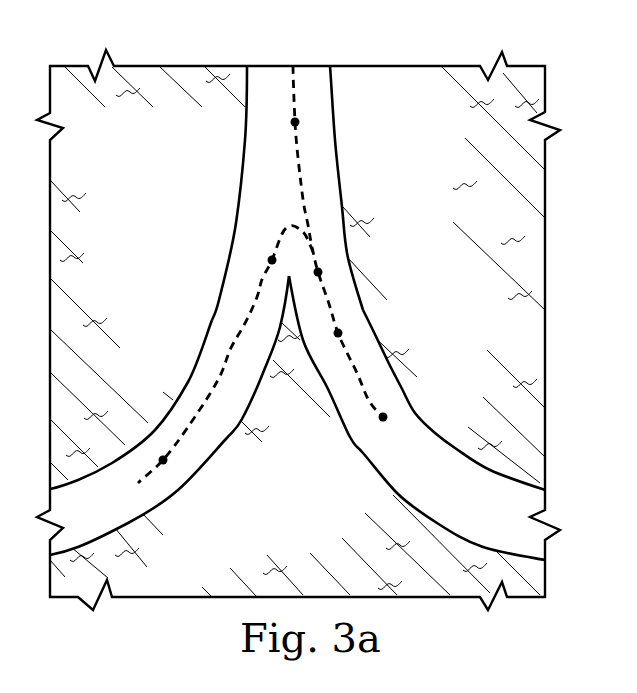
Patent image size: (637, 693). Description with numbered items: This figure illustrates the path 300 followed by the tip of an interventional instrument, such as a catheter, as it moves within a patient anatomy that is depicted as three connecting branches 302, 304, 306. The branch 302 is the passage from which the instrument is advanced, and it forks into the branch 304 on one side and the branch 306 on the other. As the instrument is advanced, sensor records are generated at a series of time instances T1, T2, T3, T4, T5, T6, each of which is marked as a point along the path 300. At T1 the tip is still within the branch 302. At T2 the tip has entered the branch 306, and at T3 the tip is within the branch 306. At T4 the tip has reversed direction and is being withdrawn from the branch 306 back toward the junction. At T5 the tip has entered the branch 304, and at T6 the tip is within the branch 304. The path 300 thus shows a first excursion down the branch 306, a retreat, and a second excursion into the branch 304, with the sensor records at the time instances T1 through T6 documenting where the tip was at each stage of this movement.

The path 300 is at (302, 192).
The branch 302 is at (248, 142).
The branch 304 is at (189, 388).
The branch 306 is at (419, 421).
The time instance T1 is at (307, 115).
The time instance T2 is at (331, 264).
The time instance T3 is at (374, 435).
The time instance T4 is at (352, 328).
The time instance T5 is at (255, 253).
The time instance T6 is at (174, 479).